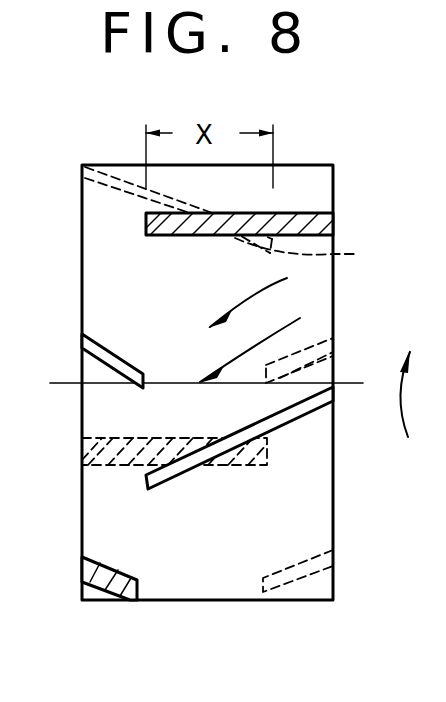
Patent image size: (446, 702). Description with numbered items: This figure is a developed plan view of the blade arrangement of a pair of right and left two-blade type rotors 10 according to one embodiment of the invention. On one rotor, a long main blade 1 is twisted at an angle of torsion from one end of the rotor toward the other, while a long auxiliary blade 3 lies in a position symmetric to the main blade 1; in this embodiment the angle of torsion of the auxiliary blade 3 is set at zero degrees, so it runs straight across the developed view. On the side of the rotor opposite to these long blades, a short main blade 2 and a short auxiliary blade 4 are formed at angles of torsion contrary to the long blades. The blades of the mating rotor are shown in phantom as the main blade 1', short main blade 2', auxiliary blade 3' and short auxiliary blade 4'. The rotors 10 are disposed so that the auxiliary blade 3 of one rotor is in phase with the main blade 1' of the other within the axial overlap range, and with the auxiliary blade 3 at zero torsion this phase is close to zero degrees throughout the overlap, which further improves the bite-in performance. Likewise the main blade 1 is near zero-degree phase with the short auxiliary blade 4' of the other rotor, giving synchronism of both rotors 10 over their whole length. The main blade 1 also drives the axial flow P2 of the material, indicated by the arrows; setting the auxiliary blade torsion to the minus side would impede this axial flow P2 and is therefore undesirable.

The rotor 10 is at (82, 248).
The main blade 1 is at (258, 438).
The main blade of the other rotor 1' is at (235, 218).
The short main blade 2 is at (89, 361).
The short main blade of the other rotor 2' is at (320, 571).
The auxiliary blade 3 is at (259, 214).
The auxiliary blade of the other rotor 3' is at (153, 468).
The short auxiliary blade 4 is at (85, 572).
The short auxiliary blade of the other rotor 4' is at (322, 350).
The axial flow P2 is at (215, 368).